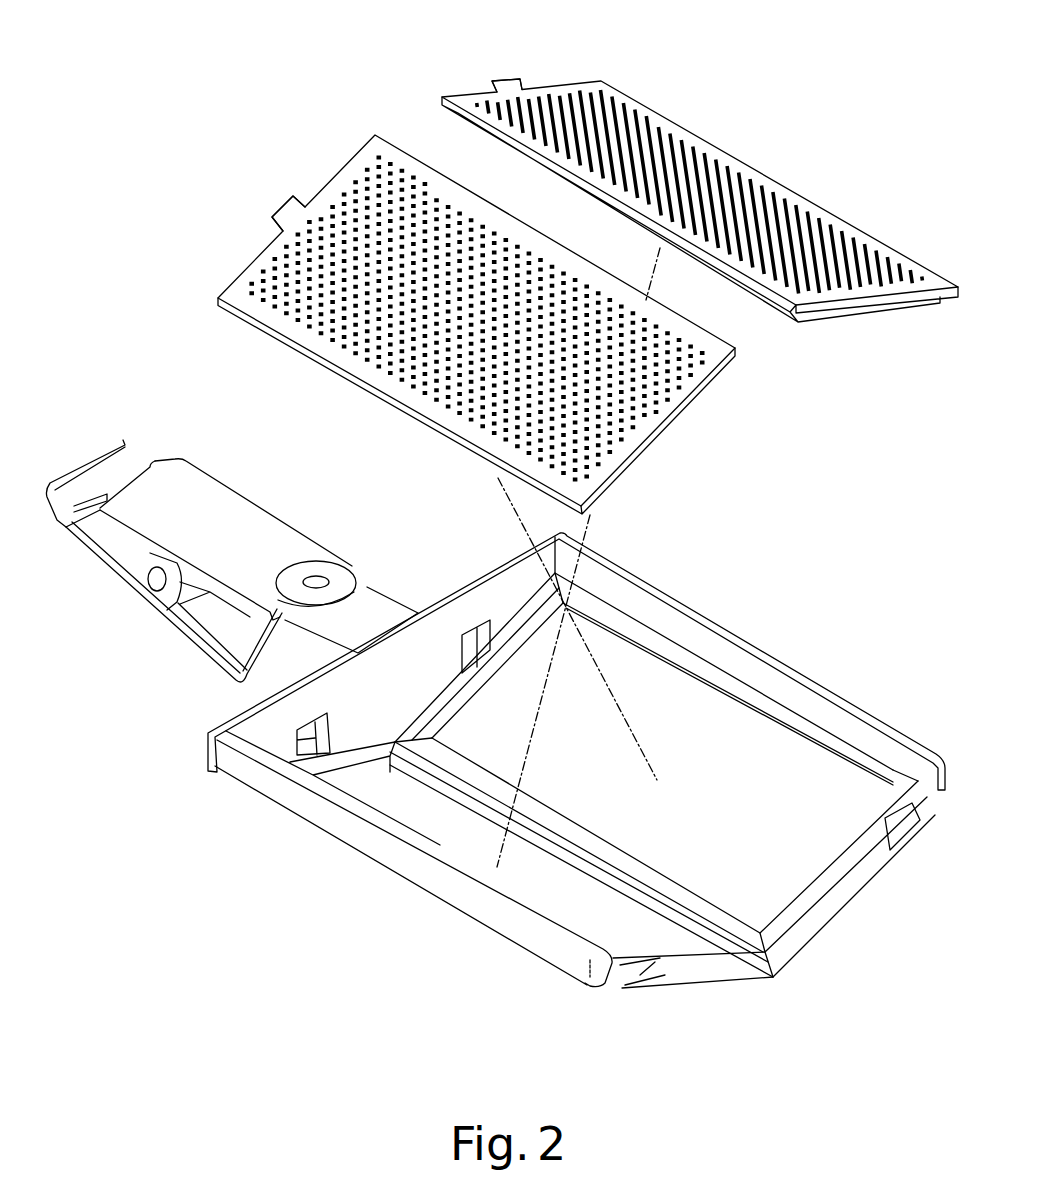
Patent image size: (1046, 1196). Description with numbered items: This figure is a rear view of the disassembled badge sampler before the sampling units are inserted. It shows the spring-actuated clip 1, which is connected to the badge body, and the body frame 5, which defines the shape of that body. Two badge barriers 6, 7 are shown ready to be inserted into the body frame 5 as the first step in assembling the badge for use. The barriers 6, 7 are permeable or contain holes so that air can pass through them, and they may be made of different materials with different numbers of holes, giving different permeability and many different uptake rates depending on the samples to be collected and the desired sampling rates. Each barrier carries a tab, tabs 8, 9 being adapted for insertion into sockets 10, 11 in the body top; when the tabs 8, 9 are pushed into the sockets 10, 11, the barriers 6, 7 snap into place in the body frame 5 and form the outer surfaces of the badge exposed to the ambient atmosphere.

The spring-actuated clip 1 is at (143, 607).
The body frame 5 is at (397, 873).
The badge barrier 6 is at (667, 430).
The badge barrier 7 is at (775, 182).
The tab 8 is at (283, 208).
The tab 9 is at (506, 81).
The socket 10 is at (303, 735).
The socket 11 is at (470, 657).